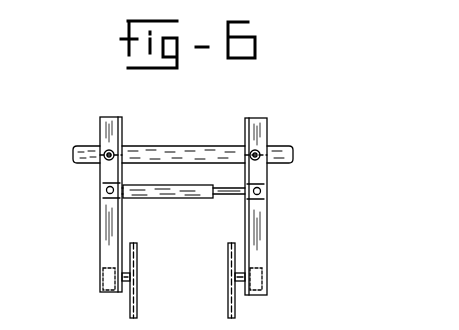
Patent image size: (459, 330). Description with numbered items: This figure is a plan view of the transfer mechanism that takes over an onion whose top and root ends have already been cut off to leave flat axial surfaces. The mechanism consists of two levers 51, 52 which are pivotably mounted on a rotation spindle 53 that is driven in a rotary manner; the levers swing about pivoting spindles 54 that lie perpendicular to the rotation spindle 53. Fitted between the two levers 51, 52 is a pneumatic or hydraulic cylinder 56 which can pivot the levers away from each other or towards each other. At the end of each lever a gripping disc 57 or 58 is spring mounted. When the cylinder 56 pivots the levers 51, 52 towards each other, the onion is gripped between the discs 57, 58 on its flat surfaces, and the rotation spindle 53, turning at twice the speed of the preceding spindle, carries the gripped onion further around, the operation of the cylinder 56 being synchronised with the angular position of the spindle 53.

The lever 51 is at (108, 232).
The lever 52 is at (258, 250).
The rotation spindle 53 is at (276, 148).
The pivoting spindle 54 is at (122, 149).
The pneumatic or hydraulic cylinder 56 is at (163, 200).
The gripping disc 57 is at (228, 298).
The gripping disc 58 is at (137, 298).